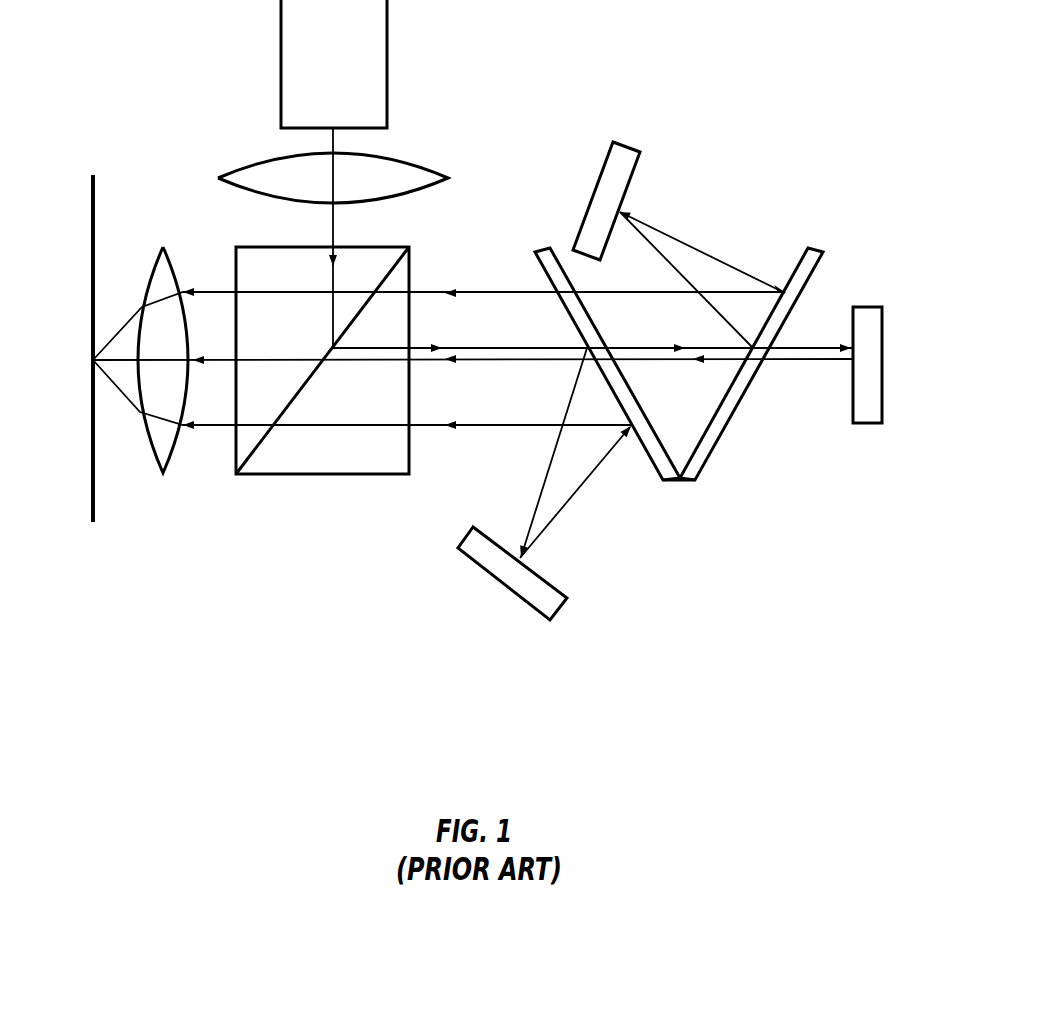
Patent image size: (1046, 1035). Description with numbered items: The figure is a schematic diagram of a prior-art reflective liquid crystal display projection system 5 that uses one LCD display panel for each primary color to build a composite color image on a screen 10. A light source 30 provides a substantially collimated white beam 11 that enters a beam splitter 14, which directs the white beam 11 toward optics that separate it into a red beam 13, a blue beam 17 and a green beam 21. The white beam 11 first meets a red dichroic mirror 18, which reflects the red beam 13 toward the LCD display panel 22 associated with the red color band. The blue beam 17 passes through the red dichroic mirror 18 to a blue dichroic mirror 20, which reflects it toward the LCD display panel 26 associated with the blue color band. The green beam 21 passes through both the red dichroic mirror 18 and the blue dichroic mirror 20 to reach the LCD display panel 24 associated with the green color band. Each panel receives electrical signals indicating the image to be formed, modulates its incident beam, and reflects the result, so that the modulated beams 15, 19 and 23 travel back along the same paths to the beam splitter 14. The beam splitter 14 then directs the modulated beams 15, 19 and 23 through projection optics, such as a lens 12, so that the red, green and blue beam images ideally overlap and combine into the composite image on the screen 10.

The reflective liquid crystal display projection system 5 is at (760, 108).
The screen 10 is at (92, 322).
The white beam 11 is at (332, 242).
The lens 12 is at (165, 474).
The red beam 13 is at (548, 472).
The beam splitter 14 is at (358, 475).
The modulated red beam 15 is at (231, 427).
The blue beam 17 is at (660, 252).
The red dichroic mirror 18 is at (660, 475).
The modulated blue beam 19 is at (468, 293).
The blue dichroic mirror 20 is at (700, 477).
The green beam 21 is at (780, 347).
The LCD display panel 22 is at (502, 585).
The modulated green beam 23 is at (302, 357).
The LCD display panel 24 is at (883, 362).
The LCD display panel 26 is at (593, 195).
The light source 30 is at (282, 55).